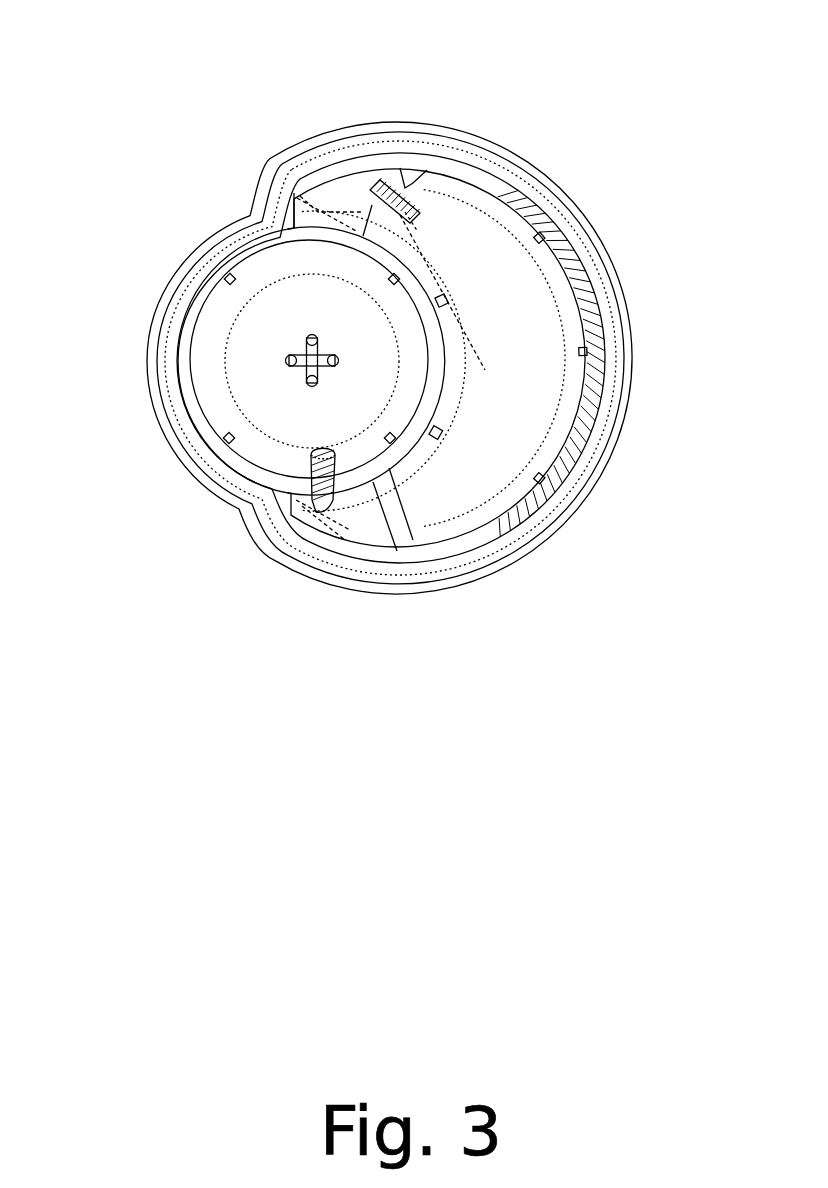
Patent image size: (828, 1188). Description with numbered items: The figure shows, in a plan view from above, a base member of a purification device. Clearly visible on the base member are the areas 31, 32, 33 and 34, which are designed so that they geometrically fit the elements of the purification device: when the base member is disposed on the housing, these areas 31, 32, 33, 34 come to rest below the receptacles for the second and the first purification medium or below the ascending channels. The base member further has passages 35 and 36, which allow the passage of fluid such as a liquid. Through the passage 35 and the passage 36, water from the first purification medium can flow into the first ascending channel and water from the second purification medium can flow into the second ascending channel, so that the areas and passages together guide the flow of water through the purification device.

The area 31 is at (226, 418).
The area 32 is at (485, 230).
The area 33 is at (325, 486).
The area 34 is at (337, 200).
The passage 35 is at (393, 197).
The passage 36 is at (323, 484).